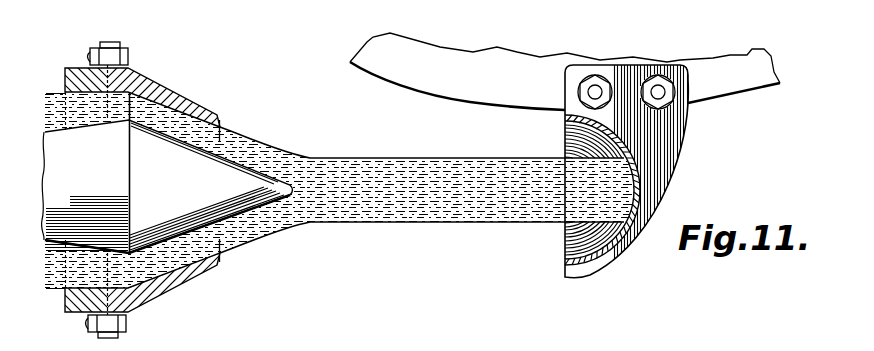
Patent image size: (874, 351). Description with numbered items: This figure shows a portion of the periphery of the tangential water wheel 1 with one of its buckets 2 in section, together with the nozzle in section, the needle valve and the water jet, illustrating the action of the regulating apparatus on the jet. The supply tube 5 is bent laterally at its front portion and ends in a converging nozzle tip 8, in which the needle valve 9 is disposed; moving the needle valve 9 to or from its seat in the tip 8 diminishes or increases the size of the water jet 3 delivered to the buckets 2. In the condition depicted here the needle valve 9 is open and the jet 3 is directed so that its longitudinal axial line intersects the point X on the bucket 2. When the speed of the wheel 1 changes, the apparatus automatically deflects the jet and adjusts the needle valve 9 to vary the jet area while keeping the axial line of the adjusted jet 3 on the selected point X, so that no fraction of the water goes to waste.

The tangential water wheel 1 is at (565, 71).
The bucket 2 is at (690, 133).
The water jet 3 is at (339, 191).
The supply tube 5 is at (92, 182).
The nozzle tip 8 is at (160, 190).
The needle valve 9 is at (167, 172).
The point X is at (650, 192).